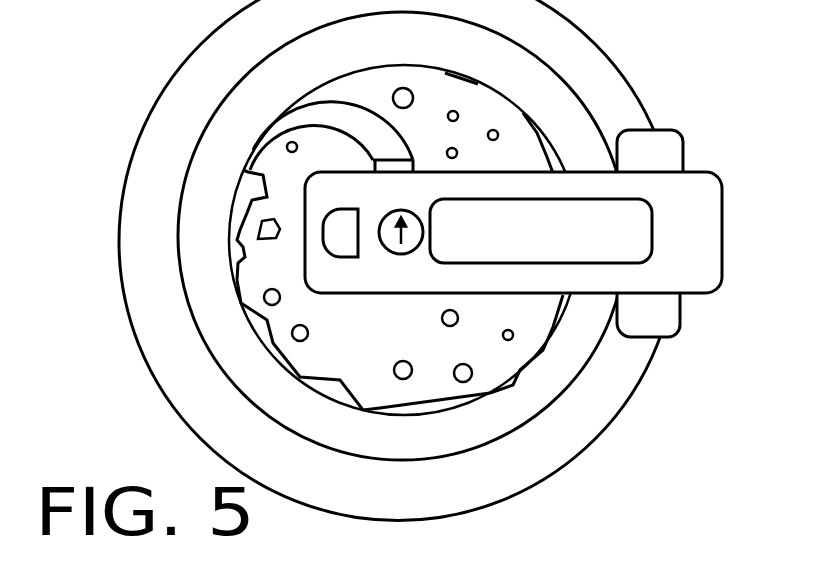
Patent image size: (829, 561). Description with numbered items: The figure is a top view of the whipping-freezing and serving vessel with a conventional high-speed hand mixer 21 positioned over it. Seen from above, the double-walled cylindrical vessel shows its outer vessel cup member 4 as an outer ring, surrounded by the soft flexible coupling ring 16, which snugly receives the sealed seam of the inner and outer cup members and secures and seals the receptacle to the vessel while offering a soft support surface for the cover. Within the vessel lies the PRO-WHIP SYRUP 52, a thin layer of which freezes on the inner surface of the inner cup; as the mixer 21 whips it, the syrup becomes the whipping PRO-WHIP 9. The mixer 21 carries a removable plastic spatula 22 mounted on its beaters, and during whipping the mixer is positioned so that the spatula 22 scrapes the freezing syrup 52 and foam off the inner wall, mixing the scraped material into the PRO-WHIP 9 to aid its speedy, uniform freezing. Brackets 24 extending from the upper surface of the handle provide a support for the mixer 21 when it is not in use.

The coupling ring 16 is at (162, 290).
The outer vessel cup member 4 is at (198, 235).
The PRO-WHIP 9 is at (380, 364).
The PRO-WHIP SYRUP 52 is at (245, 180).
The spatula 22 is at (350, 122).
The brackets 24 is at (650, 153).
The hand mixer 21 is at (735, 179).